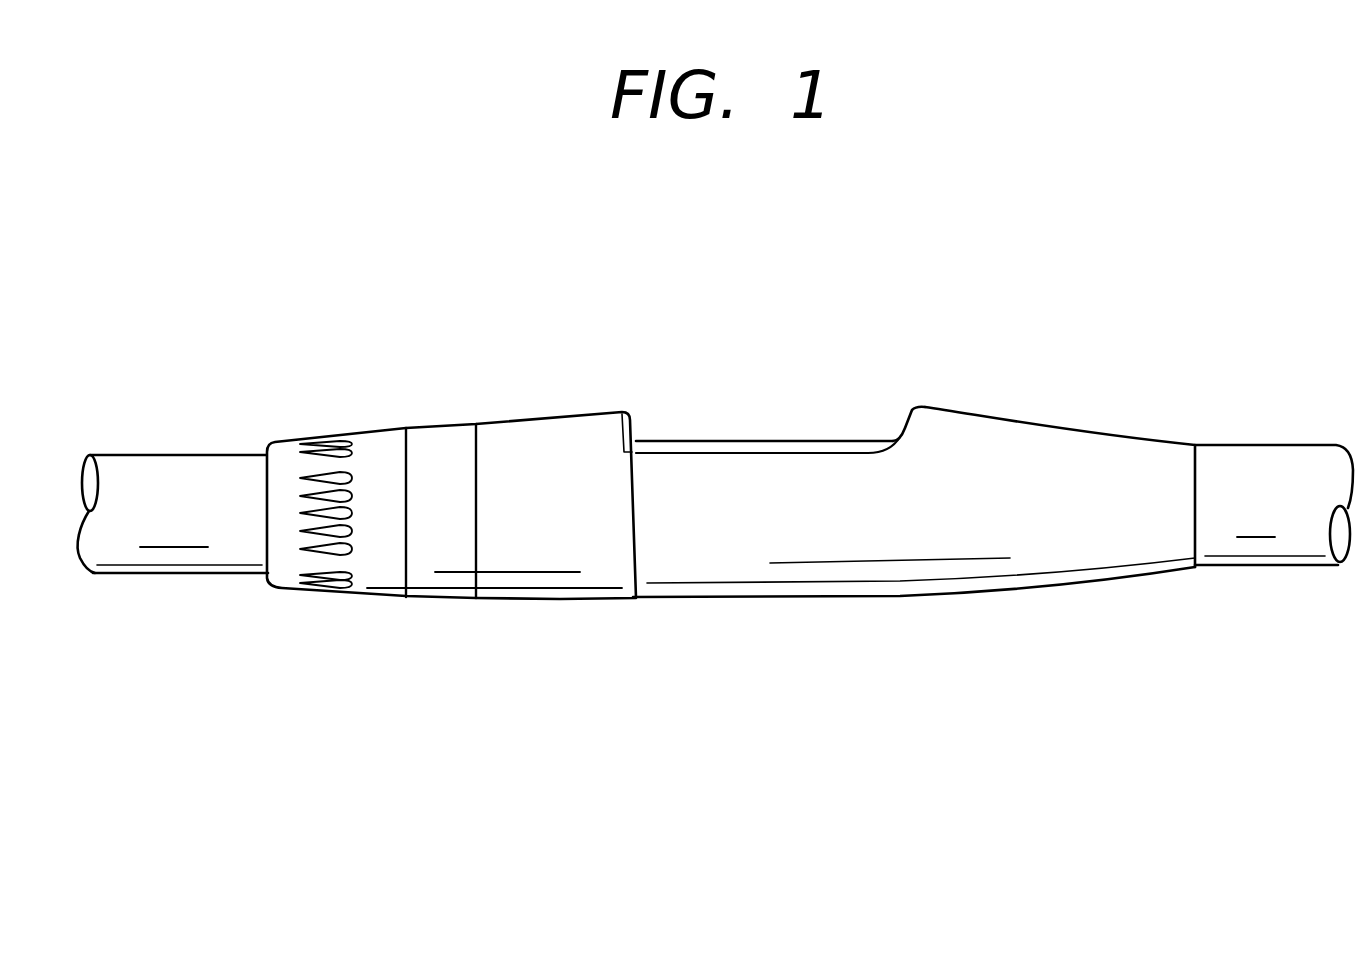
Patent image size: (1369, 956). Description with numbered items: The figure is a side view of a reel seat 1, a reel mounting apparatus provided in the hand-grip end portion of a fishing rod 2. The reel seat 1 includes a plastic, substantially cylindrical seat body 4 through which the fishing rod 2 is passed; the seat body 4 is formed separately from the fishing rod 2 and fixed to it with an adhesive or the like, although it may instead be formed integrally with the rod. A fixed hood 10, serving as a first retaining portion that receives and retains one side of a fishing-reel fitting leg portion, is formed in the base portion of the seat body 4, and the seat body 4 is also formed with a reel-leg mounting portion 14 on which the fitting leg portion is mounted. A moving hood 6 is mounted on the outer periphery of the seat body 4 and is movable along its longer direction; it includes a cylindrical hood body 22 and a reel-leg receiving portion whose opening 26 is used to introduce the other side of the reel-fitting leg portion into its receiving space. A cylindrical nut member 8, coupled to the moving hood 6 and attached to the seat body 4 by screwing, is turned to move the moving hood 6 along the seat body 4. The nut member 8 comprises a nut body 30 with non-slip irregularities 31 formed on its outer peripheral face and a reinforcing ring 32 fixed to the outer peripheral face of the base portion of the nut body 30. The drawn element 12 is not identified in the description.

The reel seat 1 is at (976, 293).
The fishing rod 2 is at (195, 558).
The seat body 4 is at (1003, 573).
The moving hood 6 is at (504, 412).
The nut member 8 is at (382, 418).
The fixed hood 10 is at (980, 432).
The latch projection 12 is at (908, 420).
The reel-leg mounting portion 14 is at (775, 440).
The hood body 22 is at (573, 588).
The opening 26 is at (636, 432).
The nut body 30 is at (385, 582).
The non-slip irregularities 31 is at (325, 440).
The reinforcing ring 32 is at (447, 585).